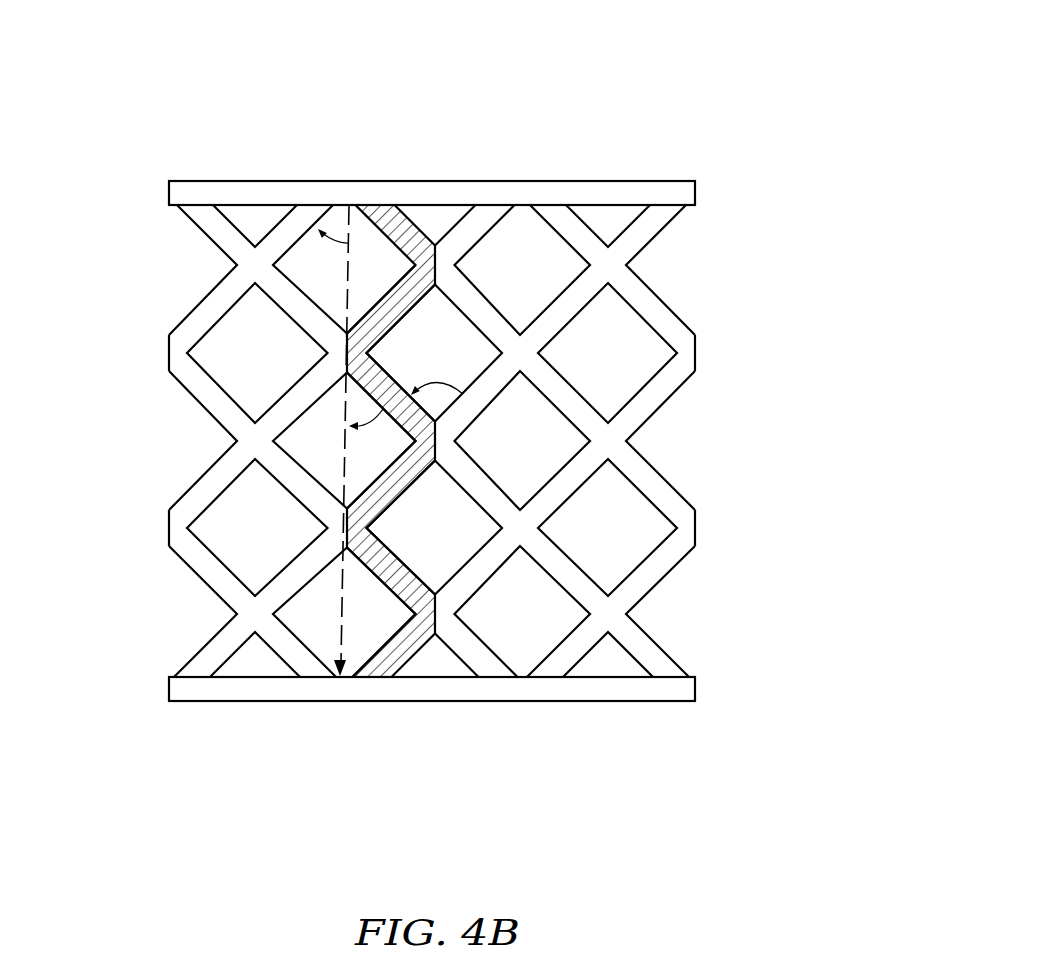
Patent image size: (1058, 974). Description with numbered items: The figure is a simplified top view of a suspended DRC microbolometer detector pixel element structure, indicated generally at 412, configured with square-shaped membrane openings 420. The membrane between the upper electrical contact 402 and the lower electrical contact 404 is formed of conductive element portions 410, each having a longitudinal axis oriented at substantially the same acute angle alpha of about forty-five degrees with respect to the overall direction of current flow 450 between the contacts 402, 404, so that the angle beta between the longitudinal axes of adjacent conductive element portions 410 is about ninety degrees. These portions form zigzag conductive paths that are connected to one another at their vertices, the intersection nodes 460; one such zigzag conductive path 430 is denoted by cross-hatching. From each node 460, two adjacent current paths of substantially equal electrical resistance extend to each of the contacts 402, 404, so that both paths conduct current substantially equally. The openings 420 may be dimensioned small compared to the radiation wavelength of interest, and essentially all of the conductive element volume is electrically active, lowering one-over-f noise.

The electrical contact 402 is at (613, 181).
The electrical contact 404 is at (613, 701).
The conductive element portions 410 is at (653, 308).
The lattice structure 412 is at (709, 58).
The membrane openings 420 is at (597, 507).
The zigzag conductive path 430 is at (397, 205).
The overall direction of current flow 450 is at (342, 205).
The intersection node 460 is at (528, 318).